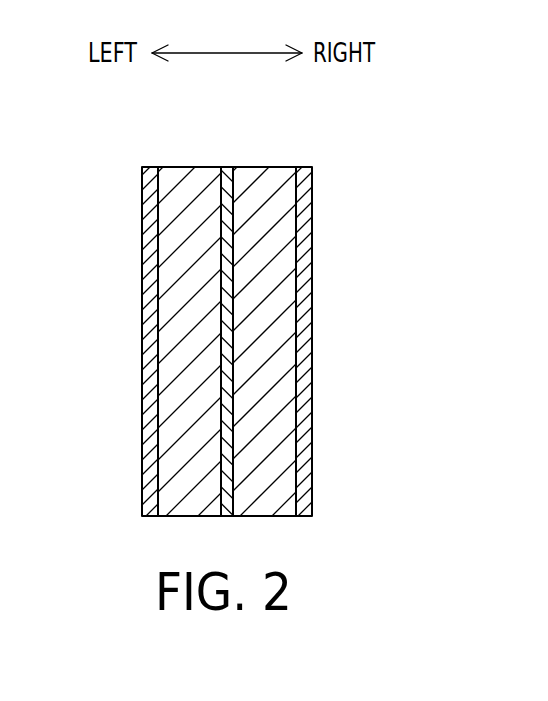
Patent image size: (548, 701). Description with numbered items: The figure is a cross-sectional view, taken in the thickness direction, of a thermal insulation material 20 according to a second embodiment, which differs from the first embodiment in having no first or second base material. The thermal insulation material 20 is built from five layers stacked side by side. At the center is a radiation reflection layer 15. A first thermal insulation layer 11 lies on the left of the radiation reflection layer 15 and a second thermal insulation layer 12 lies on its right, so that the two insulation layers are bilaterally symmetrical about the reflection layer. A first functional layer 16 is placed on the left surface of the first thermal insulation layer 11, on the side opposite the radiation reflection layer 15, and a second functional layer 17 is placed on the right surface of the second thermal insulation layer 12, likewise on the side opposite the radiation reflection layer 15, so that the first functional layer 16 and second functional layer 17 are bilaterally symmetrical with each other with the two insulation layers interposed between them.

The first thermal insulation layer 11 is at (193, 188).
The second thermal insulation layer 12 is at (263, 188).
The radiation reflection layer 15 is at (225, 188).
The first functional layer 16 is at (148, 297).
The second functional layer 17 is at (306, 295).
The thermal insulation material 20 is at (350, 165).